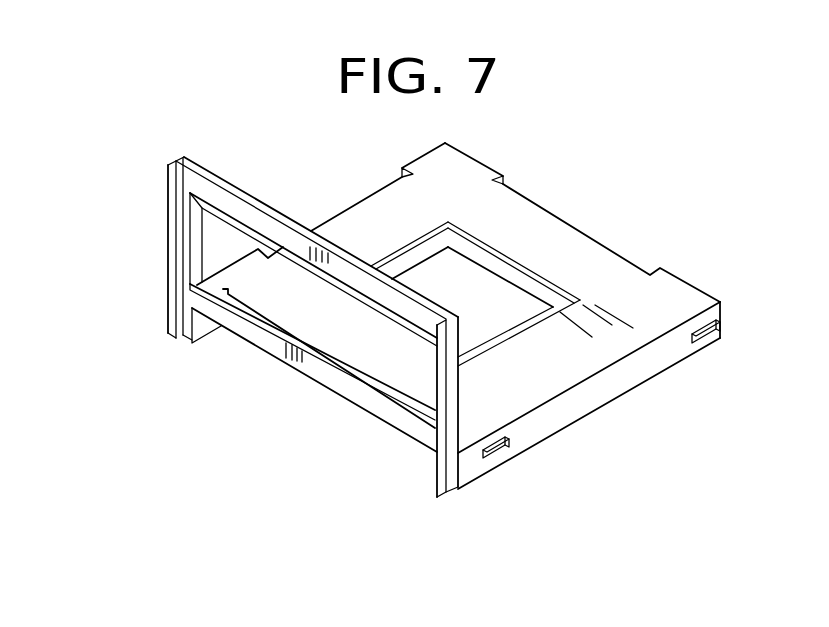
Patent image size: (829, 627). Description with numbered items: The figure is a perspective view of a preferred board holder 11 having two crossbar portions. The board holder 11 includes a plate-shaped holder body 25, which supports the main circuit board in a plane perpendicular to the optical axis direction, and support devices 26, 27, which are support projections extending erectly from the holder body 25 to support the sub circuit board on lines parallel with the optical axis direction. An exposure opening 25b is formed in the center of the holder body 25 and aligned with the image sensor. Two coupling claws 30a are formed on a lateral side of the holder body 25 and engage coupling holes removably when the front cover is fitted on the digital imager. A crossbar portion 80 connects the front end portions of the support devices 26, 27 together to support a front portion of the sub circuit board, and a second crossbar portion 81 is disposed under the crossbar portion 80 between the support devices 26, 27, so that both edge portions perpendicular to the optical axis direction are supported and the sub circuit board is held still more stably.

The board holder 11 is at (572, 226).
The holder body 25 is at (553, 370).
The exposure opening 25b is at (440, 262).
The coupling claws 30a is at (515, 456).
The crossbar portion 80 is at (228, 190).
The support device 26 is at (172, 233).
The support device 27 is at (453, 427).
The second crossbar portion 81 is at (252, 330).